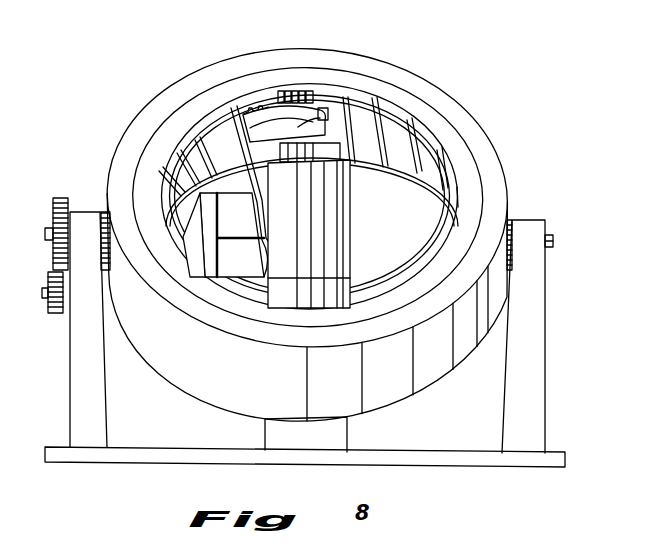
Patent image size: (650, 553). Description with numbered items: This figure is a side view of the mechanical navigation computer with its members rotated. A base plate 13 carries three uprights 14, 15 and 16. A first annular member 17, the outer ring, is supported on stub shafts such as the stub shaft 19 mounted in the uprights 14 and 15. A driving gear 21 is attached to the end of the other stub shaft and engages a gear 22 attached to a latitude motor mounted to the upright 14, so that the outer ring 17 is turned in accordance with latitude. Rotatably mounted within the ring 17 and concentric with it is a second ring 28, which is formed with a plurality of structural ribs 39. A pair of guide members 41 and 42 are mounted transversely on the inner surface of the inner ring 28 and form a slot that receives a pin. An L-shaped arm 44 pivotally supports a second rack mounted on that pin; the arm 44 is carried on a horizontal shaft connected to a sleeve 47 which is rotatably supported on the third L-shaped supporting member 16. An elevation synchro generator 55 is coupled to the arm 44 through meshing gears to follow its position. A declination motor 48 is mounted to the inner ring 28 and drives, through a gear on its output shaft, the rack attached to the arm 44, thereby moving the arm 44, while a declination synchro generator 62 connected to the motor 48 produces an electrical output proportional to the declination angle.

The base plate 13 is at (153, 458).
The upright 14 is at (80, 395).
The upright 15 is at (530, 338).
The upright 16 is at (335, 437).
The first annular member 17 is at (460, 110).
The stub shaft 19 is at (553, 240).
The driving gear 21 is at (60, 198).
The gear 22 is at (53, 313).
The second ring 28 is at (460, 150).
The structural ribs 39 is at (383, 110).
The guide member 41 is at (288, 93).
The guide member 42 is at (323, 108).
The L-shaped arm 44 is at (327, 112).
The sleeve 47 is at (337, 213).
The declination motor 48 is at (263, 107).
The elevation synchro generator 55 is at (200, 195).
The declination synchro generator 62 is at (233, 107).